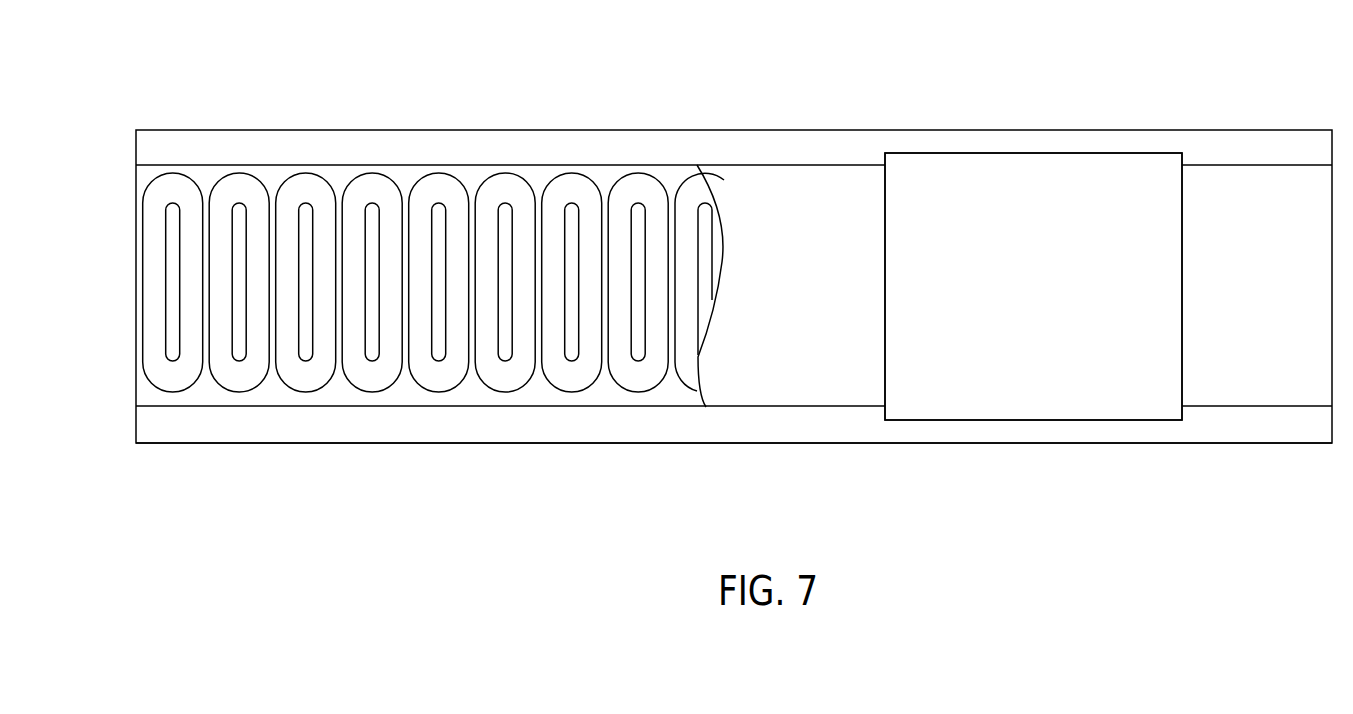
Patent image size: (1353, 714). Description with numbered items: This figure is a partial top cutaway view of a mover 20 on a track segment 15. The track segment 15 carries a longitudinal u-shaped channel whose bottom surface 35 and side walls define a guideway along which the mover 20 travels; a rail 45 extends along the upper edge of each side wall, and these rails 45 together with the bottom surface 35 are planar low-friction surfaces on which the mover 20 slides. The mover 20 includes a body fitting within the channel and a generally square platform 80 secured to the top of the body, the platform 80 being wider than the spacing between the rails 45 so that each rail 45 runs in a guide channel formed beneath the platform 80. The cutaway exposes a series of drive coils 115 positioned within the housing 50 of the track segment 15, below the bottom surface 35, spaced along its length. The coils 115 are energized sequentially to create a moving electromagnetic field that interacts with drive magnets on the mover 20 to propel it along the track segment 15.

The track segment 15 is at (745, 148).
The rail 45 is at (655, 148).
The drive coils 115 is at (373, 177).
The bottom surface 35 is at (811, 291).
The mover 20 is at (1013, 208).
The platform 80 is at (1053, 287).
The housing 50 is at (1127, 457).